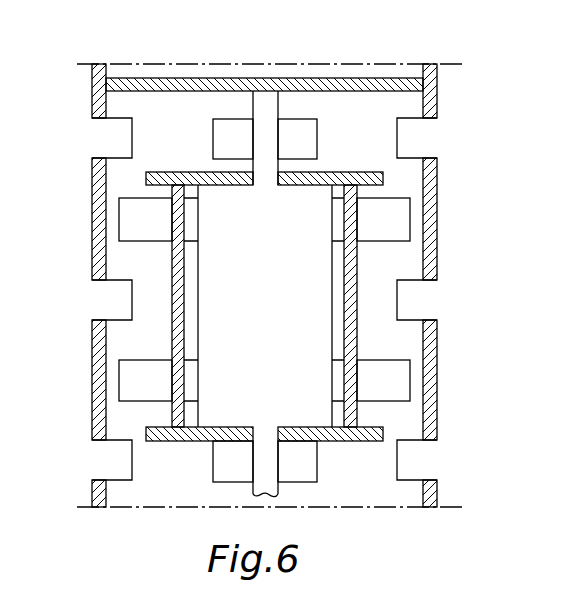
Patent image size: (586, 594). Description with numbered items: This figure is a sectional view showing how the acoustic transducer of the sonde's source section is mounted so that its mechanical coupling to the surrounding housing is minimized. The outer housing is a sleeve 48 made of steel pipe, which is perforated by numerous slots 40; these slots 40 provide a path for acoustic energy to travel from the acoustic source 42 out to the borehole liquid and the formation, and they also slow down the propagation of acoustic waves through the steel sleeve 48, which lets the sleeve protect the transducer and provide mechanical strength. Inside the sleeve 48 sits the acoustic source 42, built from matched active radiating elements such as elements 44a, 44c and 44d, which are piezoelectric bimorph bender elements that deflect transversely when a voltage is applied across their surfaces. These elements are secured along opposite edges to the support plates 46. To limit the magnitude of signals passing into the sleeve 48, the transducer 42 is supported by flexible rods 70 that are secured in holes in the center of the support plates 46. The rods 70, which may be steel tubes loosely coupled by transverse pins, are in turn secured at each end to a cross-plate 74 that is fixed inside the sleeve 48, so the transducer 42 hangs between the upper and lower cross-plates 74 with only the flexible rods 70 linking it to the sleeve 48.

The slots 40 is at (112, 458).
The sleeve 48 is at (433, 106).
The cross-plate 74 is at (170, 78).
The support plate 46 is at (146, 178).
The flexible rods 70 is at (253, 138).
The acoustic source 42 is at (372, 272).
The active radiating element 44a is at (212, 297).
The active radiating element 44c is at (172, 335).
The active radiating element 44d is at (357, 418).